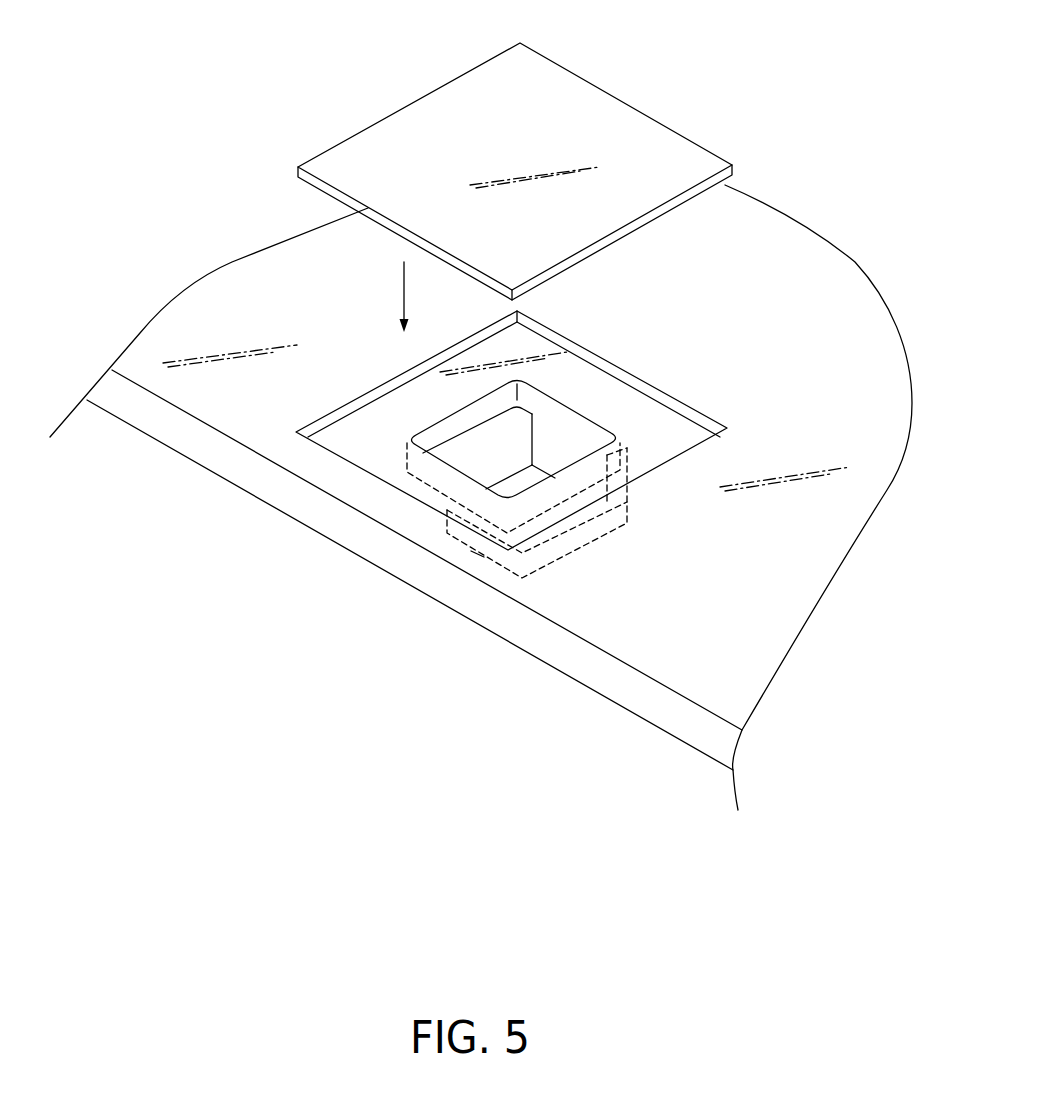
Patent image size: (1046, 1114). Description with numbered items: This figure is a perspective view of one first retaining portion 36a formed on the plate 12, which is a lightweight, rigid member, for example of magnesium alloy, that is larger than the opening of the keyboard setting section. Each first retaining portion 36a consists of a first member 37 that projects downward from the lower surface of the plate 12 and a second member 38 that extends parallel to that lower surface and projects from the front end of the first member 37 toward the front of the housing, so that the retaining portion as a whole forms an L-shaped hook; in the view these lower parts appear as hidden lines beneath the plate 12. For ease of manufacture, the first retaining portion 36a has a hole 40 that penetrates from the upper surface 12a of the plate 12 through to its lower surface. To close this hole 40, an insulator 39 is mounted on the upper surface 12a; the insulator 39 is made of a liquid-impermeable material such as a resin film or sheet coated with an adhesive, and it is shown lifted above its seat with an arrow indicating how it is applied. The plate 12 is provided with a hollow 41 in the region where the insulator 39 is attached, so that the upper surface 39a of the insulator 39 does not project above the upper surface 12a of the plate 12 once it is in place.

The plate 12 is at (205, 284).
The upper surface of the plate 12a is at (280, 297).
The first retaining portion 36a is at (576, 560).
The first member 37 is at (566, 452).
The second member 38 is at (477, 556).
The insulator 39 is at (580, 113).
The upper surface of the insulator 39a is at (465, 123).
The hole 40 is at (420, 432).
The hollow 41 is at (690, 402).